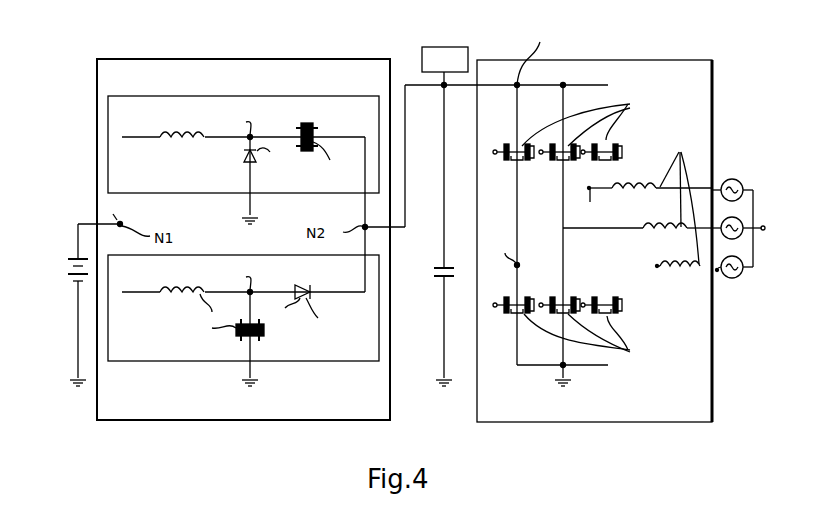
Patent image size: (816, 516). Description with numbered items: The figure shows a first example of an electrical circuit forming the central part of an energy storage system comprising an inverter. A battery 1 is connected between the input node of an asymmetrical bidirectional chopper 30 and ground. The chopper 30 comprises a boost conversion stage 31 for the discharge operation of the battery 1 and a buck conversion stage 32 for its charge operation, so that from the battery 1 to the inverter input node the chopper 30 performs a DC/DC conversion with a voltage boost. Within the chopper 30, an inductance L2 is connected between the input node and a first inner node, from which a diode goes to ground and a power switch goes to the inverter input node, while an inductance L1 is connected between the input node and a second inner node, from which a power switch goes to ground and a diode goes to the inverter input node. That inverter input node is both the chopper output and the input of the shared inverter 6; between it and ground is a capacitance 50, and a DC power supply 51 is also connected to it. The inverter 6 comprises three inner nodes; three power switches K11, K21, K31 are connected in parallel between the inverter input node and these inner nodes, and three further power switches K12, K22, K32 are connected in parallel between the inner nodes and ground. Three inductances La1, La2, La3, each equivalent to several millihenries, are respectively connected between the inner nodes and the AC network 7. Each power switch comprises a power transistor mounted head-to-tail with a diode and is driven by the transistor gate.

The battery 1 is at (78, 283).
The shared inverter 6 is at (598, 424).
The AC network 7 is at (750, 284).
The asymmetrical bidirectional chopper 30 is at (250, 422).
The boost conversion stage 31 is at (176, 362).
The buck conversion stage 32 is at (150, 105).
The capacitance 50 is at (440, 273).
The DC power supply 51 is at (444, 47).
The inductance L1 is at (182, 283).
The inductance L2 is at (189, 155).
The power switch K11 is at (511, 161).
The power switch K21 is at (557, 161).
The power switch K31 is at (600, 161).
The power switch K12 is at (511, 296).
The power switch K22 is at (557, 296).
The power switch K32 is at (600, 296).
The inductance La1 is at (678, 256).
The inductance La2 is at (637, 218).
The inductance La3 is at (650, 179).